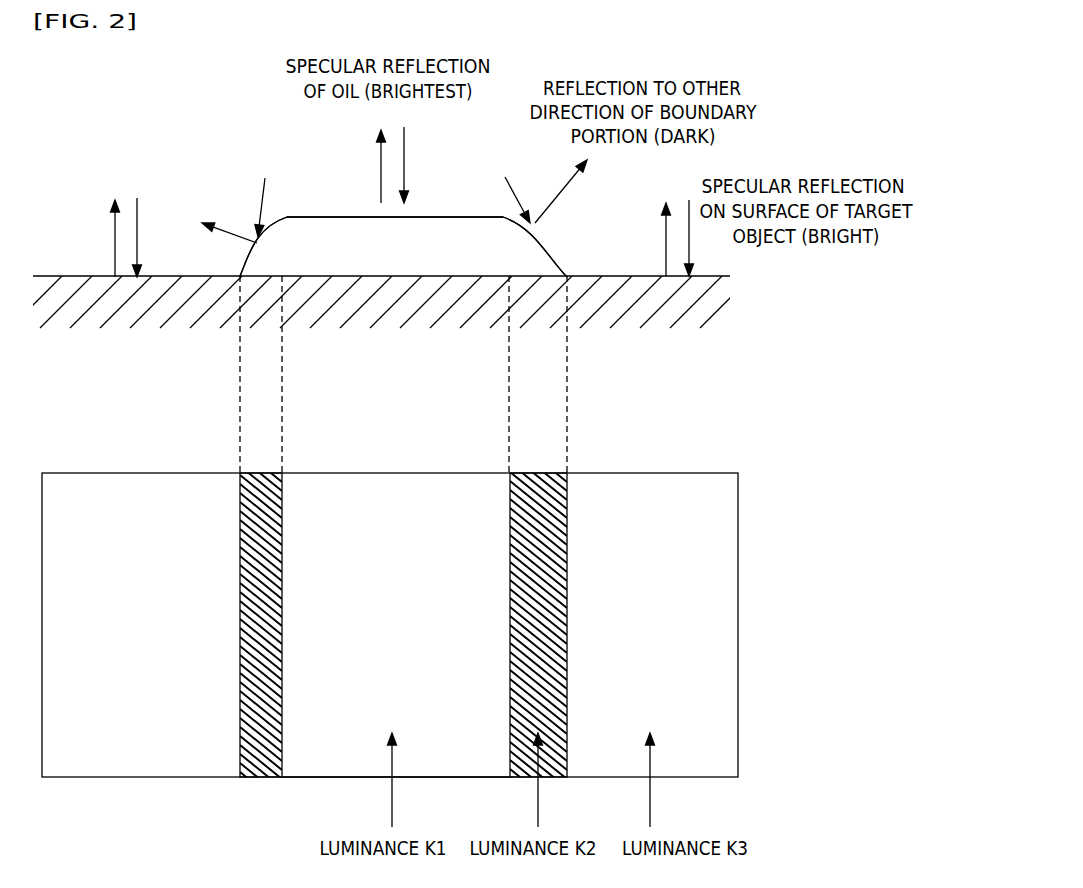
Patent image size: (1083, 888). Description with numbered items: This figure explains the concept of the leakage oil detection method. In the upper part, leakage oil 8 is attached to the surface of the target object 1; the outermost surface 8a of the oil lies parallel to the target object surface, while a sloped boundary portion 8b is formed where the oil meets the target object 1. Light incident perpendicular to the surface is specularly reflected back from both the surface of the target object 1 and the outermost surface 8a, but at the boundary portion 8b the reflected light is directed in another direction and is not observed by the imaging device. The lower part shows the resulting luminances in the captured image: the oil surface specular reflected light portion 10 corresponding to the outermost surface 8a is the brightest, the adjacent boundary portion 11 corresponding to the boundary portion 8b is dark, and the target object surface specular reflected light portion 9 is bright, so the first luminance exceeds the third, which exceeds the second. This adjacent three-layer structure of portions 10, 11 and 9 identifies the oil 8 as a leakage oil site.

The target object 1 is at (683, 473).
The leakage oil 8 is at (400, 262).
The outermost surface of the oil 8a is at (283, 197).
The boundary portion 8b is at (283, 197).
The target object surface specular reflected light portion 9 is at (725, 622).
The oil surface specular reflected light portion 10 is at (333, 768).
The boundary portion between the oil and the target object (in the image) 11 is at (252, 733).